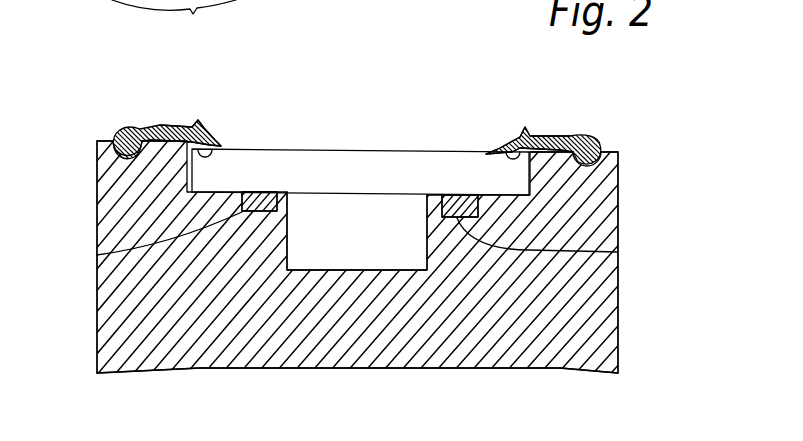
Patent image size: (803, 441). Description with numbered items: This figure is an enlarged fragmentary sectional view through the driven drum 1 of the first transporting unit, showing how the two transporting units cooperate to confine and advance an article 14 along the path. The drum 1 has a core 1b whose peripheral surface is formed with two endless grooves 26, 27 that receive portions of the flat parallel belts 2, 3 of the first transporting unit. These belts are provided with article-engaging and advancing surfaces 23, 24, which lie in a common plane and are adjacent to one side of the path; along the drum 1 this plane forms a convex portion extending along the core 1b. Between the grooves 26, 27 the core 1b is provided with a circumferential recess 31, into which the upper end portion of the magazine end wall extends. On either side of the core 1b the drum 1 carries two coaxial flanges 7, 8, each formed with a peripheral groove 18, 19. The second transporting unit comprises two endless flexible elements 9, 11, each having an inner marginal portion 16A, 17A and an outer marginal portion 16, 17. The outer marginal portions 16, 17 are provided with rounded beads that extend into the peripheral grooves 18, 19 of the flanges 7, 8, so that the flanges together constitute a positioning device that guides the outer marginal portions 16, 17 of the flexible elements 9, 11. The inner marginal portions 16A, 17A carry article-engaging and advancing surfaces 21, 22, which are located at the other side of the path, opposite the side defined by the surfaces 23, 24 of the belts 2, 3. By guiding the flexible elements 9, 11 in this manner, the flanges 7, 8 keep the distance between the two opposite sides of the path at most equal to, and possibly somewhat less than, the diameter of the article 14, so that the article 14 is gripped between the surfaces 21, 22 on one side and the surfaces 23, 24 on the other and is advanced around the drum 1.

The drum 1 is at (622, 331).
The core 1b is at (351, 353).
The belt 2 is at (263, 196).
The belt 3 is at (452, 197).
The flange 7 is at (110, 163).
The flange 8 is at (608, 172).
The endless flexible element 9 is at (157, 112).
The endless flexible element 11 is at (547, 118).
The article 14 is at (357, 165).
The outer marginal portion 16 is at (120, 128).
The inner marginal portion 16A is at (222, 146).
The outer marginal portion 17 is at (593, 138).
The inner marginal portion 17A is at (488, 148).
The peripheral groove 18 is at (128, 158).
The peripheral groove 19 is at (587, 167).
The article-engaging and advancing surface 21 is at (215, 146).
The article-engaging and advancing surface 22 is at (507, 152).
The article-engaging and advancing surface 23 is at (253, 194).
The article-engaging and advancing surface 24 is at (460, 198).
The endless groove 26 is at (97, 255).
The endless groove 27 is at (618, 252).
The circumferential recess 31 is at (328, 210).